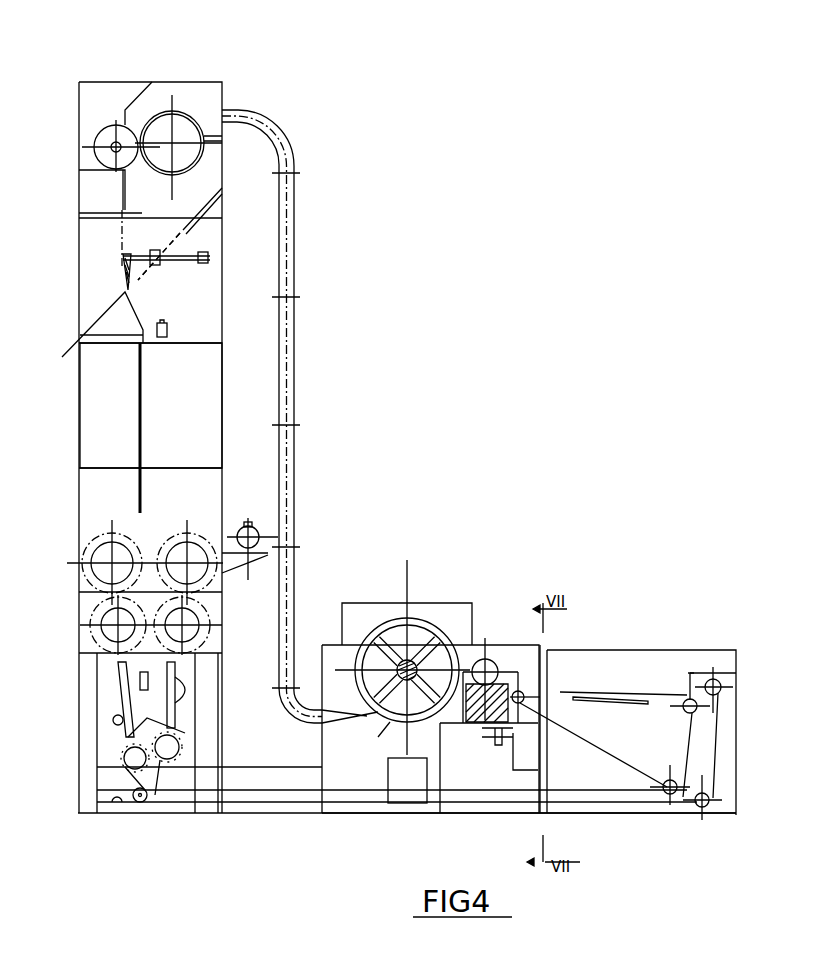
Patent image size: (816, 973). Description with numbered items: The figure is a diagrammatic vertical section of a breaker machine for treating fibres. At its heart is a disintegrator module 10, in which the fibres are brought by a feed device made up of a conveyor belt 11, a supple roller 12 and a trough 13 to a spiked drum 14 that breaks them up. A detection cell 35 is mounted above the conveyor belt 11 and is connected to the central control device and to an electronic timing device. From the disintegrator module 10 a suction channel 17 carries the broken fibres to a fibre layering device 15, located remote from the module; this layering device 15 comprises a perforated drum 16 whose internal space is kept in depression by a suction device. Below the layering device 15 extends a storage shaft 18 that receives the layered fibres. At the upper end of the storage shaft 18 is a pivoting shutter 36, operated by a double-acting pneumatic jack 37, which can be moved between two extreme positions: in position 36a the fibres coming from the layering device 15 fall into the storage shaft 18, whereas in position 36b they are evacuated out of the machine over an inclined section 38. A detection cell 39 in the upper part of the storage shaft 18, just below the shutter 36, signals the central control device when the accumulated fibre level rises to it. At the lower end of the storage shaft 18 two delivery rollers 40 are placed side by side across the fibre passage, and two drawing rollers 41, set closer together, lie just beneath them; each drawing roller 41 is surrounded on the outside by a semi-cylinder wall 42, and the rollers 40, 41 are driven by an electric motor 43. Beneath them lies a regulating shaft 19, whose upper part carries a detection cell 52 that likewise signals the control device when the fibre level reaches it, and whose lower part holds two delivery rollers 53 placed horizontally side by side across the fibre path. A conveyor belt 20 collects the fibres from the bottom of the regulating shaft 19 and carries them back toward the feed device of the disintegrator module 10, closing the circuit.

The disintegrator module 10 is at (365, 824).
The conveyor belt 11 is at (562, 692).
The supple roller 12 is at (510, 660).
The trough 13 is at (453, 665).
The spiked drum 14 is at (385, 623).
The fibre layering device 15 is at (190, 74).
The perforated drum 16 is at (198, 113).
The suction channel 17 is at (294, 370).
The storage shaft 18 is at (192, 416).
The regulating shaft 19 is at (147, 718).
The conveyor belt 20 is at (242, 787).
The detection cell 35 is at (690, 673).
The pivoting shutter 36 is at (120, 272).
The shutter position 36a is at (117, 238).
The shutter position 36b is at (190, 302).
The double-acting pneumatic jack 37 is at (192, 248).
The inclined section 38 is at (90, 321).
The detection cell 39 is at (155, 334).
The delivery rollers 40 is at (107, 530).
The drawing rollers 41 is at (100, 617).
The semi-cylinder wall 42 is at (98, 642).
The electric motor 43 is at (240, 527).
The detection cell 52 is at (133, 685).
The delivery rollers 53 is at (160, 760).